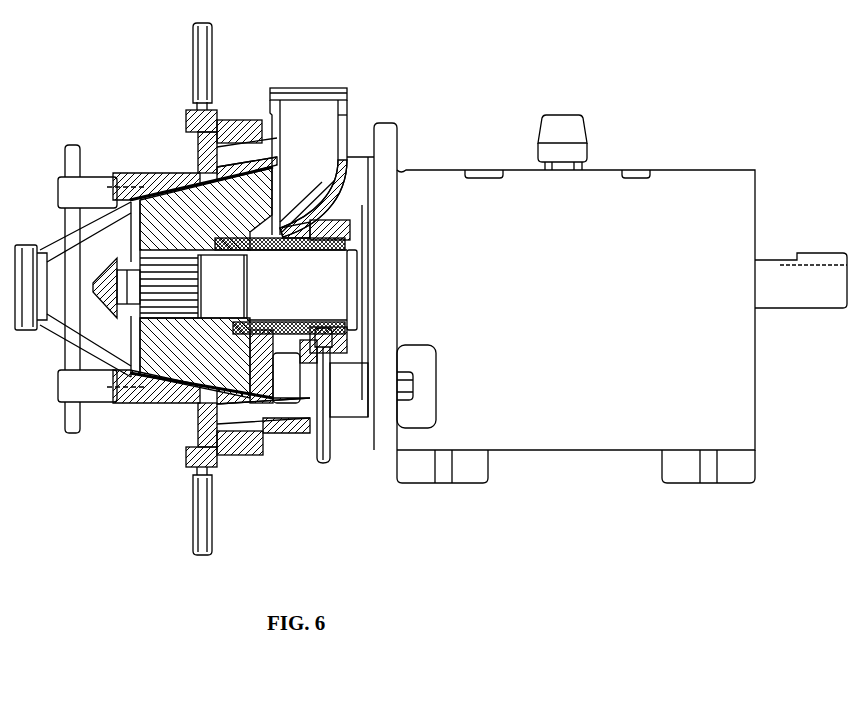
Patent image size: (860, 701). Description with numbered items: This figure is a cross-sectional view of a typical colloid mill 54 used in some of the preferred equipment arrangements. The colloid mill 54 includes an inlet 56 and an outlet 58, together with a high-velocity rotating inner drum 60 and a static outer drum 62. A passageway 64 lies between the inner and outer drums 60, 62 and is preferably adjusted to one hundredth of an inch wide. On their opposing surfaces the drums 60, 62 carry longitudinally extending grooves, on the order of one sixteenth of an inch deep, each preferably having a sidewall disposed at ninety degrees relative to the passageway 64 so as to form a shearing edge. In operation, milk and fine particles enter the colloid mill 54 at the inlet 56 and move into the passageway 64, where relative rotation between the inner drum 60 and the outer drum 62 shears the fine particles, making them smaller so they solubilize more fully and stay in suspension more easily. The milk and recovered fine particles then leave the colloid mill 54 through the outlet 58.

The colloid mill 54 is at (45, 70).
The inlet 56 is at (308, 138).
The outlet 58 is at (47, 212).
The inner drum 60 is at (243, 118).
The outer drum 62 is at (144, 173).
The passageway 64 is at (168, 404).